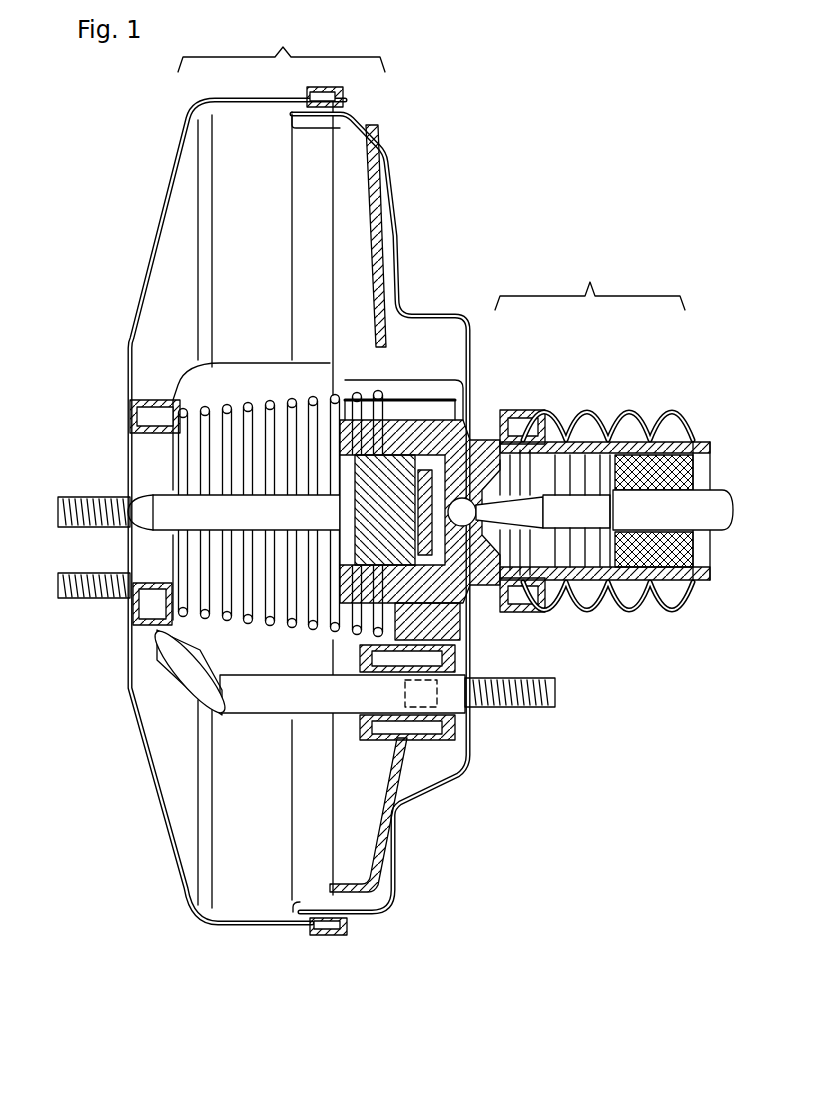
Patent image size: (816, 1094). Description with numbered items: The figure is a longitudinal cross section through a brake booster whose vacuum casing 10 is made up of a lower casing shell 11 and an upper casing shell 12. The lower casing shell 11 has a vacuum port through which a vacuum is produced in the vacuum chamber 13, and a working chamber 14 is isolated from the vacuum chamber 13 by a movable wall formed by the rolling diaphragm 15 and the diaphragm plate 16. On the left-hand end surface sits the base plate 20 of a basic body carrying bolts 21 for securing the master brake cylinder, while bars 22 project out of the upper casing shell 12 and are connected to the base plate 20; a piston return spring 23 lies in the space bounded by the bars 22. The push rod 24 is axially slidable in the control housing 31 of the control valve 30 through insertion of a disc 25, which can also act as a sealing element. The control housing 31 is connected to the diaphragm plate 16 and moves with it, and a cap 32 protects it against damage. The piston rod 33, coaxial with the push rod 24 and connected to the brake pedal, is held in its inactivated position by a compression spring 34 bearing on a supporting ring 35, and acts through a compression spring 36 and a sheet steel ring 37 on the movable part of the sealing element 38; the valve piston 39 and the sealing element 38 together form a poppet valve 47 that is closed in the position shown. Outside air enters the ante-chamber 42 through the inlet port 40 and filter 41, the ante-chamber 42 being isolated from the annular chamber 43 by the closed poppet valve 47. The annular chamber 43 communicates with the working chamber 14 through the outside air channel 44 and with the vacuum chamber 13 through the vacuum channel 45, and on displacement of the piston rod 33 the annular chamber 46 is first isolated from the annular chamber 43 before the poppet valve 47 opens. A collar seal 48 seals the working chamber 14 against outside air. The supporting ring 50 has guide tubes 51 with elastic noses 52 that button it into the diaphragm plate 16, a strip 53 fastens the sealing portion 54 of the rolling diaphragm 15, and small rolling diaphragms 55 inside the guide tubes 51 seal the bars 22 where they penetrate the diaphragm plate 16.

The vacuum casing 10 is at (281, 42).
The lower casing shell 11 is at (170, 178).
The upper casing shell 12 is at (382, 123).
The vacuum chamber 13 is at (177, 238).
The working chamber 14 is at (377, 157).
The rolling diaphragm 15 is at (377, 188).
The diaphragm plate 16 is at (377, 212).
The base plate 20 is at (143, 445).
The bolts 21 is at (72, 568).
The bars 22 is at (255, 702).
The piston return spring 23 is at (218, 618).
The push rod 24 is at (163, 500).
The disc 25 is at (397, 508).
The control valve 30 is at (590, 280).
The control housing 31 is at (338, 630).
The cap 32 is at (677, 598).
The piston rod 33 is at (692, 480).
The compression spring 34 is at (612, 455).
The supporting ring 35 is at (580, 427).
The compression spring 36 is at (547, 440).
The sheet steel ring 37 is at (525, 440).
The sealing element 38 is at (487, 462).
The valve piston 39 is at (460, 475).
The inlet port 40 is at (720, 560).
The filter 41 is at (662, 592).
The ante-chamber 42 is at (607, 585).
The annular chamber 43 is at (483, 578).
The outside air channel 44 is at (475, 585).
The vacuum channel 45 is at (418, 347).
The annular chamber 46 is at (550, 598).
The poppet valve 47 is at (505, 610).
The collar seal 48 is at (555, 590).
The supporting ring 50 is at (350, 722).
The guide tubes 51 is at (358, 723).
The elastic noses 52 is at (360, 735).
The strip 53 is at (453, 730).
The sealing portion 54 is at (403, 733).
The small rolling diaphragms 55 is at (417, 657).